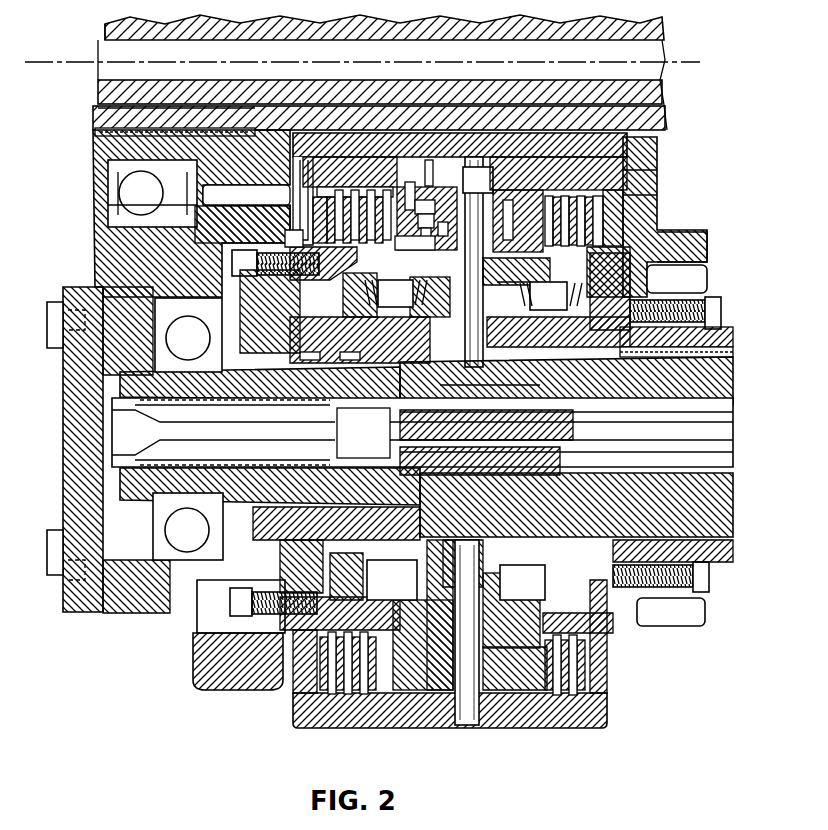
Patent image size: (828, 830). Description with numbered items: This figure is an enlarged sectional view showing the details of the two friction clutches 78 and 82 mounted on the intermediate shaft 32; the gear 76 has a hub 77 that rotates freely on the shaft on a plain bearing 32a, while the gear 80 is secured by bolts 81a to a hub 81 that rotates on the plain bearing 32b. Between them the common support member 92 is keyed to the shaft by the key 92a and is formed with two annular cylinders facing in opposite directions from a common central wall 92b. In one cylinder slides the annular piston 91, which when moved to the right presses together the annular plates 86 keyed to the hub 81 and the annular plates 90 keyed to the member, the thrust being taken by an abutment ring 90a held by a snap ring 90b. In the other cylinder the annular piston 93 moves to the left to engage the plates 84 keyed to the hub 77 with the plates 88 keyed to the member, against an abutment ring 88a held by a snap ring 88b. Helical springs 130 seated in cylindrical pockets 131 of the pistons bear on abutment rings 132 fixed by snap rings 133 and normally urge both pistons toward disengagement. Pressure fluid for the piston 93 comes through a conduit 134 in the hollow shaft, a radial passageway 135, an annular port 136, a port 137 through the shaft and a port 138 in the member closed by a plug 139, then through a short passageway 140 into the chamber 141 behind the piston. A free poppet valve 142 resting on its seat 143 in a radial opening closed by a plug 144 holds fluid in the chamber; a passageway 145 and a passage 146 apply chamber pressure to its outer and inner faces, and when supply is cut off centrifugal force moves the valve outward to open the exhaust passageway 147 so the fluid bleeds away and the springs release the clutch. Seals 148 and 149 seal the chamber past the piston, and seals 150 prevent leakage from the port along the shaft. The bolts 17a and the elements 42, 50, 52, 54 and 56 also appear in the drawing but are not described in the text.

The input shaft 42 is at (98, 110).
The seal ring 50 is at (95, 134).
The sleeve 52 is at (548, 142).
The housing 54 is at (298, 150).
The flange 56 is at (705, 250).
The gear 76 is at (232, 232).
The hub 77 is at (270, 311).
The friction clutch 78 is at (370, 197).
The gear 80 is at (707, 285).
The hub 81 is at (610, 291).
The bolts 81a is at (720, 314).
The friction clutch 82 is at (603, 185).
The annular plates 84 is at (362, 258).
The annular plates 86 is at (556, 272).
The annular plates 88 is at (350, 177).
The abutment ring 88a is at (302, 230).
The snap ring 88b is at (330, 190).
The annular plates 90 is at (588, 200).
The abutment ring 90a is at (605, 225).
The snap ring 90b is at (610, 186).
The annular piston 91 is at (513, 288).
The common support member 92 is at (445, 155).
The key 92a is at (520, 388).
The common central wall 92b is at (560, 180).
The annular piston 93 is at (415, 254).
The helical springs 130 is at (470, 505).
The cylindrical pockets 131 is at (462, 295).
The abutment rings 132 is at (465, 339).
The snap rings 133 is at (453, 346).
The pressure fluid conduit 134 is at (110, 414).
The radial passageway 135 is at (486, 425).
The annular port 136 is at (427, 375).
The port 137 is at (471, 376).
The port 138 is at (471, 250).
The plug 139 is at (483, 168).
The short passageway 140 is at (449, 503).
The chamber 141 is at (475, 230).
The free poppet valve 142 is at (395, 192).
The seat 143 is at (418, 243).
The plug 144 is at (428, 195).
The passageway 145 is at (440, 204).
The passage 146 is at (445, 244).
The fluid exhaust passageway 147 is at (427, 207).
The seal 148 is at (360, 340).
The seal 149 is at (440, 185).
The seals 150 is at (520, 380).
The bolt 17a is at (232, 264).
The intermediate shaft 32 is at (722, 388).
The plain bearing 32a is at (260, 382).
The plain bearing 32b is at (733, 353).